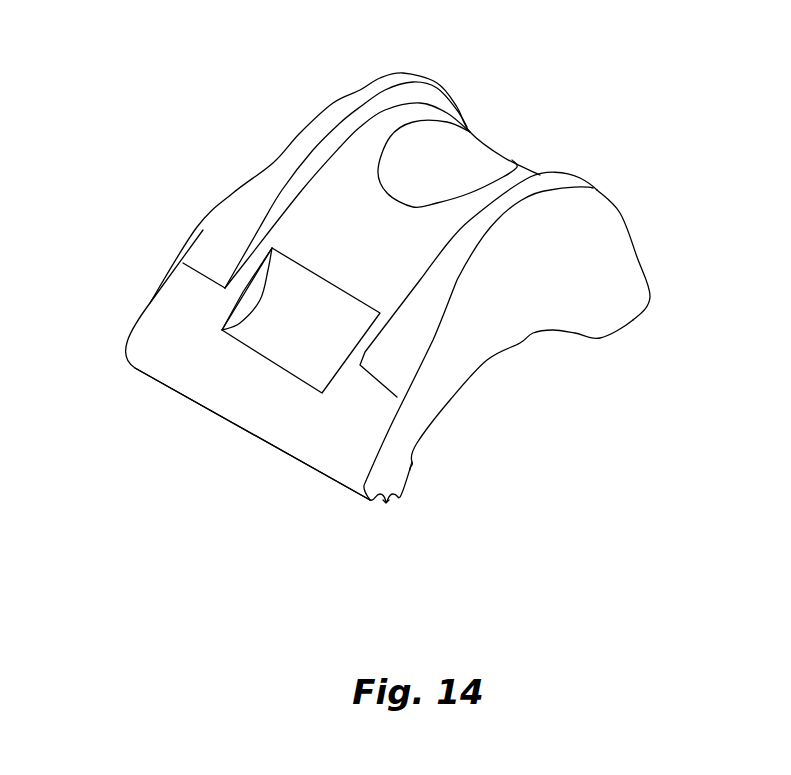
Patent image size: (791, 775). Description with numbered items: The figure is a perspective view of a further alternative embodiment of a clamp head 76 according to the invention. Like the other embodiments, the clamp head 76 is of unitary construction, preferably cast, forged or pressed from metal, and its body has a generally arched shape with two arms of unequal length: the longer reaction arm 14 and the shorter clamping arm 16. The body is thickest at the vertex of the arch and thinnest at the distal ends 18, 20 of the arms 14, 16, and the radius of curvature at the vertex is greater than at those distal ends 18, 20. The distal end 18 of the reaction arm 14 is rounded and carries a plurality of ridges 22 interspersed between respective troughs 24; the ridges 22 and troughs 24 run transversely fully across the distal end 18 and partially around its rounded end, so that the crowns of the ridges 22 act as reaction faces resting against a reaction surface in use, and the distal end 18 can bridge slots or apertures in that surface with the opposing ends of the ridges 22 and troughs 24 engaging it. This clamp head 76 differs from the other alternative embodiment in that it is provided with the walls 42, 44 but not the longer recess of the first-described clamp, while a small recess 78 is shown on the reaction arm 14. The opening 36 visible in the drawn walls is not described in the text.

The clamp head 76 is at (632, 113).
The wall 44 is at (348, 100).
The opening 36 is at (472, 150).
The wall 42 is at (557, 180).
The clamping arm 16 is at (620, 257).
The distal end of clamping arm 20 is at (633, 320).
The reaction arm 14 is at (222, 395).
The distal end of reaction arm 18 is at (297, 458).
The small recess 78 is at (280, 322).
The troughs 24 is at (380, 505).
The ridges 22 is at (382, 505).